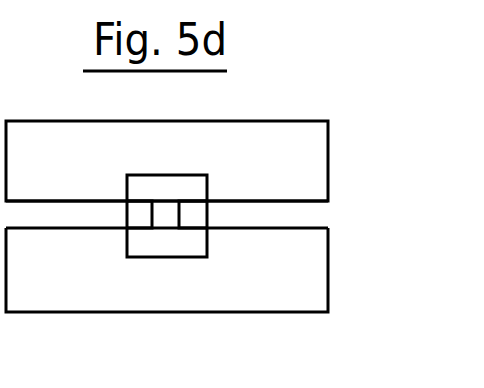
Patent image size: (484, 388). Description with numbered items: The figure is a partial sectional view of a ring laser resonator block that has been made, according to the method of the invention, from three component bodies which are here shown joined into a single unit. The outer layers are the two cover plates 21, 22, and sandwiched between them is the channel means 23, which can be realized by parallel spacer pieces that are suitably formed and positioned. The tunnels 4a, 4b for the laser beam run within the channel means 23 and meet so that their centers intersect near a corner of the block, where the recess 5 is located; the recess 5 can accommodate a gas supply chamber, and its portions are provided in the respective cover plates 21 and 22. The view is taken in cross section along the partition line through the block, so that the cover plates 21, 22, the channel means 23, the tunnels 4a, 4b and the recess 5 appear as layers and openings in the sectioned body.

The cover plate 21 is at (303, 172).
The cover plate 22 is at (303, 289).
The channel means 23 is at (305, 219).
The recess 5 is at (168, 240).
The tunnel 4a is at (192, 215).
The tunnel 4b is at (141, 210).